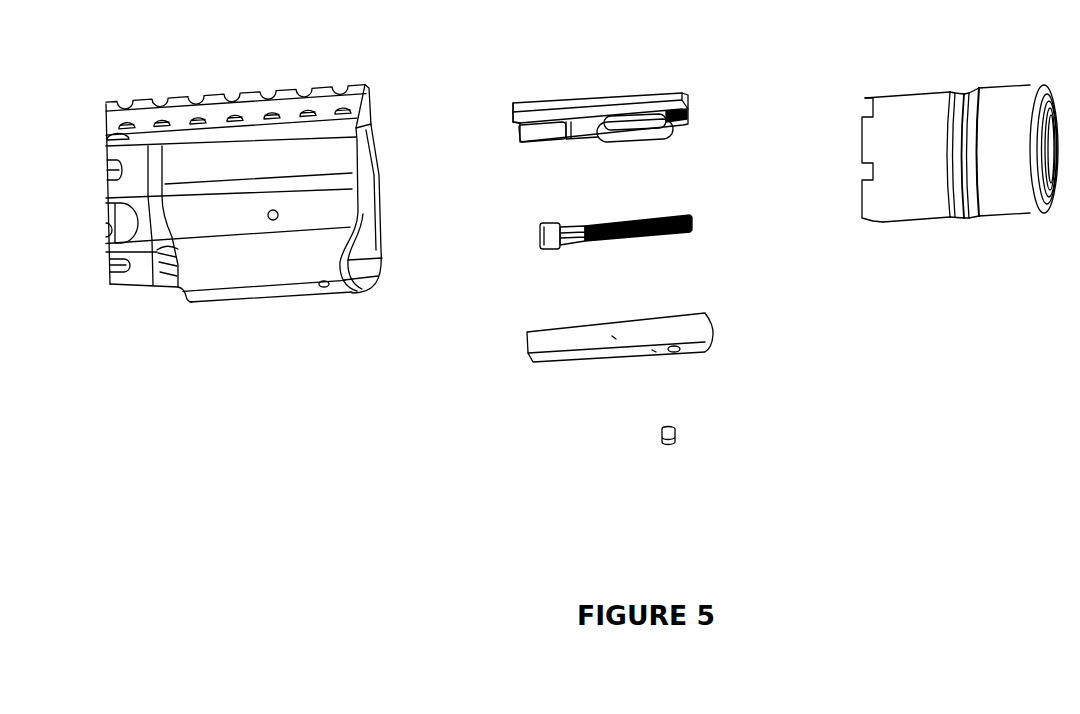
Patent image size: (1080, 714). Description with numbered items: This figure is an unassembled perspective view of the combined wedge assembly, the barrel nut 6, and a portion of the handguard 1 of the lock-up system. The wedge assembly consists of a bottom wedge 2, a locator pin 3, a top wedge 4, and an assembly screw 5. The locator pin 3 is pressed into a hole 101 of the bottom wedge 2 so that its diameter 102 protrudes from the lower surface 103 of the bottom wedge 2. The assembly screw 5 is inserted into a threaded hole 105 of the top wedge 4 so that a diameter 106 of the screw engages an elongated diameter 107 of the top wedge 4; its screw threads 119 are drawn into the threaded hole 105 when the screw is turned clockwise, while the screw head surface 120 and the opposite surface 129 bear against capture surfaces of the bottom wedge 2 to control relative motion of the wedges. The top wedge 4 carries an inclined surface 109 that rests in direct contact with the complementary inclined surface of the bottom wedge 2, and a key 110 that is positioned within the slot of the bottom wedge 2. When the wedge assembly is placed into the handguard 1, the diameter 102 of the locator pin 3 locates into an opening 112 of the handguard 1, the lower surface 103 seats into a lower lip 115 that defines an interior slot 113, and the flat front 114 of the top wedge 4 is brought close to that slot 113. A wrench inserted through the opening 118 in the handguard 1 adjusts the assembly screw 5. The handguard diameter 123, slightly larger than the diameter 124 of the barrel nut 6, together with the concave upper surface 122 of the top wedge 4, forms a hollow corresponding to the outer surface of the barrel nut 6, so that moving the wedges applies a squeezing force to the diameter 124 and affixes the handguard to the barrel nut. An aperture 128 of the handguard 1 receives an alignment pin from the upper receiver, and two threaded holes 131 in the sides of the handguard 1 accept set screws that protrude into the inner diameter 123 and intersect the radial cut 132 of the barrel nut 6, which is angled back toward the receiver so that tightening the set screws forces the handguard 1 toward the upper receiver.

The handguard 1 is at (185, 87).
The bottom wedge 2 is at (543, 321).
The locator pin 3 is at (674, 440).
The top wedge 4 is at (545, 88).
The assembly screw 5 is at (540, 220).
The barrel nut 6 is at (963, 235).
The hole 101 is at (712, 340).
The diameter 102 is at (662, 433).
The lower surface 103 is at (680, 350).
The threaded hole 105 is at (690, 113).
The diameter 106 is at (552, 248).
The elongated diameter 107 is at (543, 130).
The inclined surface 109 is at (590, 137).
The key 110 is at (640, 132).
The opening 112 is at (323, 293).
The interior slot 113 is at (380, 277).
The flat front 114 is at (507, 110).
The lower lip 115 is at (160, 278).
The opening 118 is at (200, 256).
The screw threads 119 is at (645, 240).
The screw head surface 120 is at (577, 242).
The concave upper surface 122 is at (688, 102).
The handguard diameter 123 is at (372, 202).
The diameter 124 is at (912, 157).
The aperture 128 is at (381, 115).
The surface 129 is at (540, 234).
The threaded holes 131 is at (272, 226).
The radial cut 132 is at (979, 89).